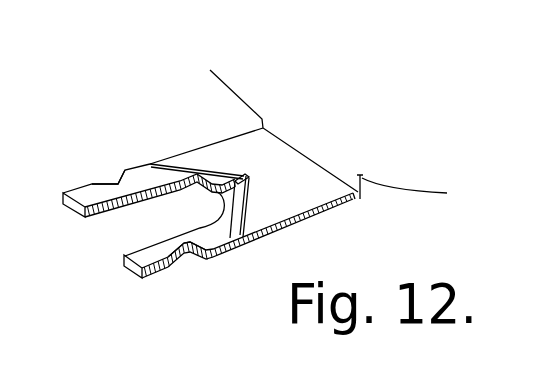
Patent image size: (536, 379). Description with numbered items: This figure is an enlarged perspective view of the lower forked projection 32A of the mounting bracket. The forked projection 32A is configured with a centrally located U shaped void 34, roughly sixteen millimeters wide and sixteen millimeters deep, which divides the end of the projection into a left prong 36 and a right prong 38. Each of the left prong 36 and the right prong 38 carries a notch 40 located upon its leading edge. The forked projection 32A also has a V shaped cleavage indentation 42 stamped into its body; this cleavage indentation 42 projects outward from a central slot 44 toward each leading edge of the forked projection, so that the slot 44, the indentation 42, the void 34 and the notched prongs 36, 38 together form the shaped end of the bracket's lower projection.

The forked projection 32A is at (310, 191).
The U shaped void 34 is at (128, 228).
The left prong 36 is at (153, 260).
The right prong 38 is at (83, 194).
The notch 40 is at (113, 180).
The cleavage indentation 42 is at (186, 178).
The central slot 44 is at (246, 175).